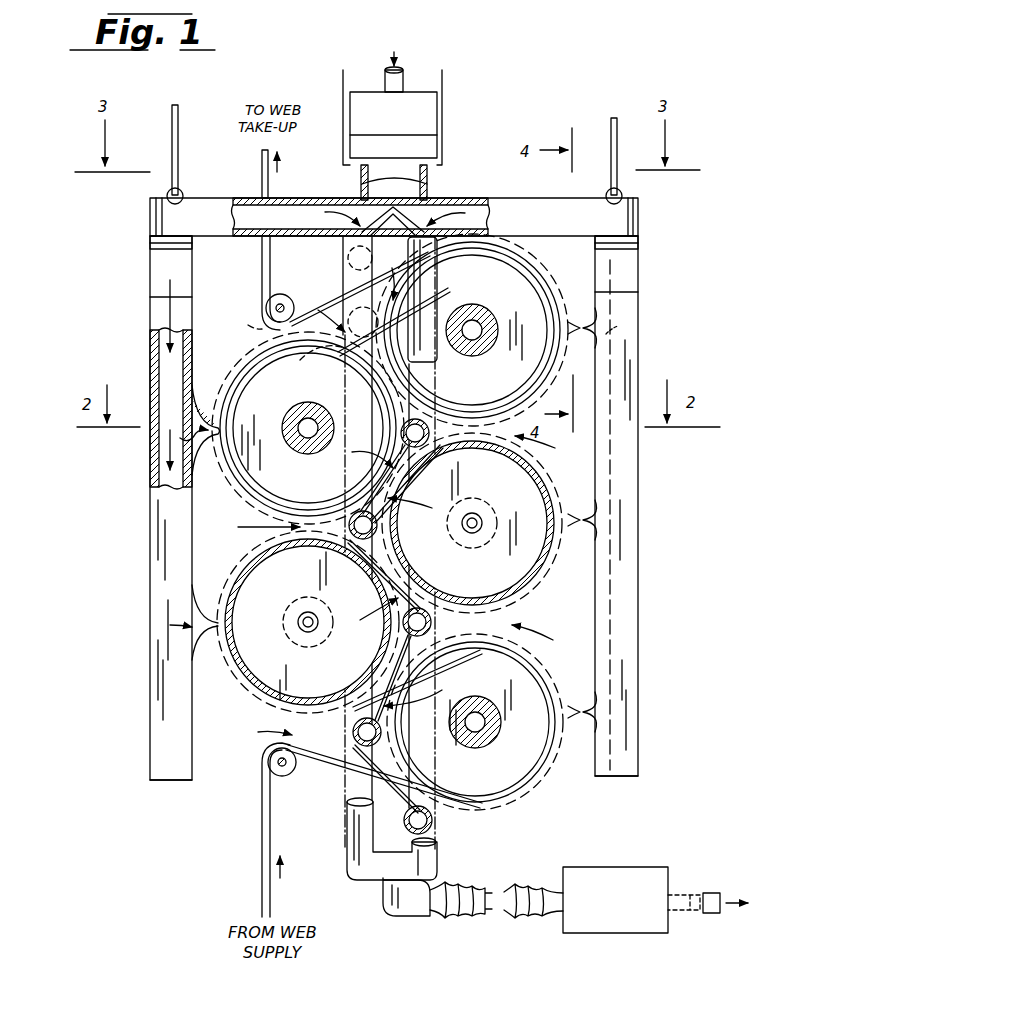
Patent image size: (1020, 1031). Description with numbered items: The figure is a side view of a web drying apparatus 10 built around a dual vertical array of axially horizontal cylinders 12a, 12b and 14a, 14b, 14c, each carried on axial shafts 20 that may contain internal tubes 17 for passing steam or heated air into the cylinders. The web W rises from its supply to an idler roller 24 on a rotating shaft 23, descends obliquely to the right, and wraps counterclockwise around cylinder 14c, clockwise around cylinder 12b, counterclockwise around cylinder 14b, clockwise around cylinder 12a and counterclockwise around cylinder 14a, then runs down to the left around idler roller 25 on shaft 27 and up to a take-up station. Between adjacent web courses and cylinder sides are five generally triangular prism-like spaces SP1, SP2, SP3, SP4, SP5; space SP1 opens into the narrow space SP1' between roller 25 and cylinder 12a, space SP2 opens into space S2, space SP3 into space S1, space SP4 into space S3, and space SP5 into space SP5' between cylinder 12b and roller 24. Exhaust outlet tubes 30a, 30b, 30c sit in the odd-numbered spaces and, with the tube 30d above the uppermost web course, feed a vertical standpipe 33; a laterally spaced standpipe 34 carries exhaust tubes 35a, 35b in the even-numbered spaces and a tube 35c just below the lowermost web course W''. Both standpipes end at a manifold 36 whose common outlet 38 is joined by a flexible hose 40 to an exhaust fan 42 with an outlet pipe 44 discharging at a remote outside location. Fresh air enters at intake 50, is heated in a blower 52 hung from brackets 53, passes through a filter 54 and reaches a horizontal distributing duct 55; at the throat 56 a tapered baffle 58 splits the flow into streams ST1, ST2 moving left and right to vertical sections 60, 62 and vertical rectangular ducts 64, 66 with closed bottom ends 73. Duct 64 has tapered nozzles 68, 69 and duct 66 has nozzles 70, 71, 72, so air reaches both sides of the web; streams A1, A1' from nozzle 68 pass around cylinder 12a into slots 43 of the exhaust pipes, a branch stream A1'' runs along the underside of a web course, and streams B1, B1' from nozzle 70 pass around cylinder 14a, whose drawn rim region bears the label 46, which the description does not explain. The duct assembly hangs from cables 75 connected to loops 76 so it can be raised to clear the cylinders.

The web drying apparatus 10 is at (102, 612).
The cylinder 12a is at (250, 365).
The cylinder 12b is at (262, 557).
The cylinder 14a is at (528, 282).
The cylinder 14b is at (538, 575).
The cylinder 14c is at (538, 758).
The internal tube 17 is at (300, 632).
The axial shaft 20 is at (487, 722).
The rotating shaft 23 is at (288, 764).
The idler roller 24 is at (283, 778).
The idler roller 25 is at (270, 318).
The shaft 27 is at (282, 304).
The exhaust outlet tube 30a is at (378, 326).
The exhaust outlet tube 30b is at (378, 532).
The exhaust outlet tube 30c is at (353, 738).
The exhaust outlet tube 30d is at (350, 258).
The standpipe 33 is at (350, 836).
The standpipe 34 is at (430, 275).
The exhaust tube 35a is at (418, 418).
The exhaust tube 35b is at (420, 606).
The exhaust tube 35c is at (434, 822).
The manifold 36 is at (375, 874).
The common outlet 38 is at (410, 918).
The flexible hose 40 is at (465, 916).
The exhaust fan 42 is at (603, 930).
The holes 43 is at (358, 512).
The outlet pipe 44 is at (714, 913).
The drum rim 46 is at (530, 350).
The fresh air intake 50 is at (405, 78).
The blower 52 is at (440, 110).
The brackets 53 is at (440, 137).
The filter 54 is at (352, 150).
The horizontal distributing duct 55 is at (555, 205).
The throat 56 is at (428, 172).
The tapered divider or baffle 58 is at (368, 187).
The vertical section 60 is at (160, 278).
The vertical section 62 is at (635, 274).
The vertical rectangular duct 64 is at (170, 542).
The vertical rectangular duct 66 is at (612, 525).
The tapered nozzle 68 is at (202, 405).
The tapered nozzle 69 is at (204, 610).
The tapered nozzle 70 is at (578, 322).
The tapered nozzle 71 is at (582, 514).
The tapered nozzle 72 is at (582, 706).
The bottom end 73 is at (165, 782).
The cable 75 is at (180, 140).
The loop 76 is at (183, 196).
The web W is at (319, 289).
The lowermost web course W'' is at (384, 792).
The air stream arrow A1 is at (244, 406).
The air stream arrow A1' is at (248, 425).
The branch stream A1'' is at (323, 359).
The air stream B1 is at (513, 283).
The air stream B1' is at (518, 369).
The space S1 is at (256, 522).
The space S2 is at (547, 446).
The space S3 is at (545, 636).
The air stream ST1 is at (324, 216).
The air stream ST2 is at (480, 216).
The prism-like space SP1 is at (392, 271).
The narrow space SP1' is at (321, 307).
The prism-like space SP2 is at (368, 452).
The prism-like space SP3 is at (414, 498).
The prism-like space SP4 is at (370, 617).
The prism-like space SP5 is at (428, 687).
The space SP5' is at (252, 729).